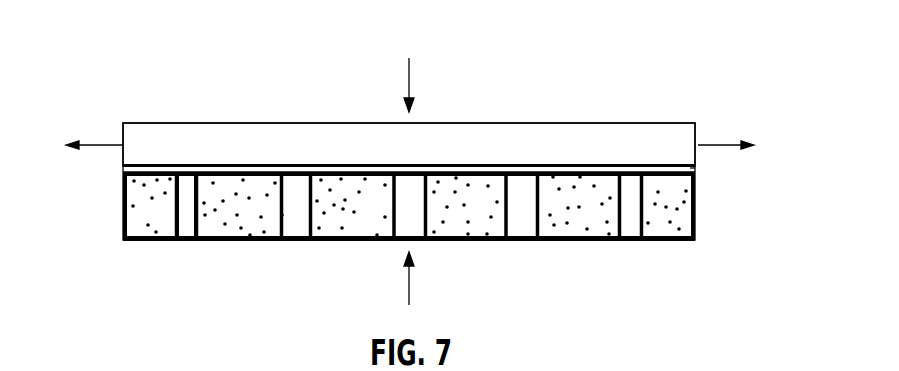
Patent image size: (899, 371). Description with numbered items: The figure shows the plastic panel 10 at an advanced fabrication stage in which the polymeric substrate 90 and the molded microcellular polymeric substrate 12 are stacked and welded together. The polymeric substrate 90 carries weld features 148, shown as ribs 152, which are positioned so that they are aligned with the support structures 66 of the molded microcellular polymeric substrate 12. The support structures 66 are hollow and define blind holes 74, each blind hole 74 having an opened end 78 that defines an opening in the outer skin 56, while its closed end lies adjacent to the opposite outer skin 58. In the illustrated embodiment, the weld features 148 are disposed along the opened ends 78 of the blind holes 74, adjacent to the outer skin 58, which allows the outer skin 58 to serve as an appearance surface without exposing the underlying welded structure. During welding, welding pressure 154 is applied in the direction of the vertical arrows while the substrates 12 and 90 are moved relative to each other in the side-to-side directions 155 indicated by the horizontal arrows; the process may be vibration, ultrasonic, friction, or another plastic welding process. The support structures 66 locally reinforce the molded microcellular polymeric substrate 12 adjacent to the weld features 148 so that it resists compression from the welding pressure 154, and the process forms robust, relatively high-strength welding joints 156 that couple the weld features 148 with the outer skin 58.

The plastic panel 10 is at (138, 50).
The molded microcellular polymeric substrate 12 is at (125, 205).
The outer skin 56 is at (123, 172).
The outer skin 58 is at (150, 242).
The support structures 66 is at (283, 215).
The blind holes 74 is at (183, 240).
The opened end 78 is at (186, 175).
The polymeric substrate 90 is at (170, 135).
The weld features 148 is at (148, 172).
The ribs 152 is at (697, 170).
The welding pressure 154 is at (412, 82).
The side-to-side directions 155 is at (92, 145).
The welding joints 156 is at (200, 172).